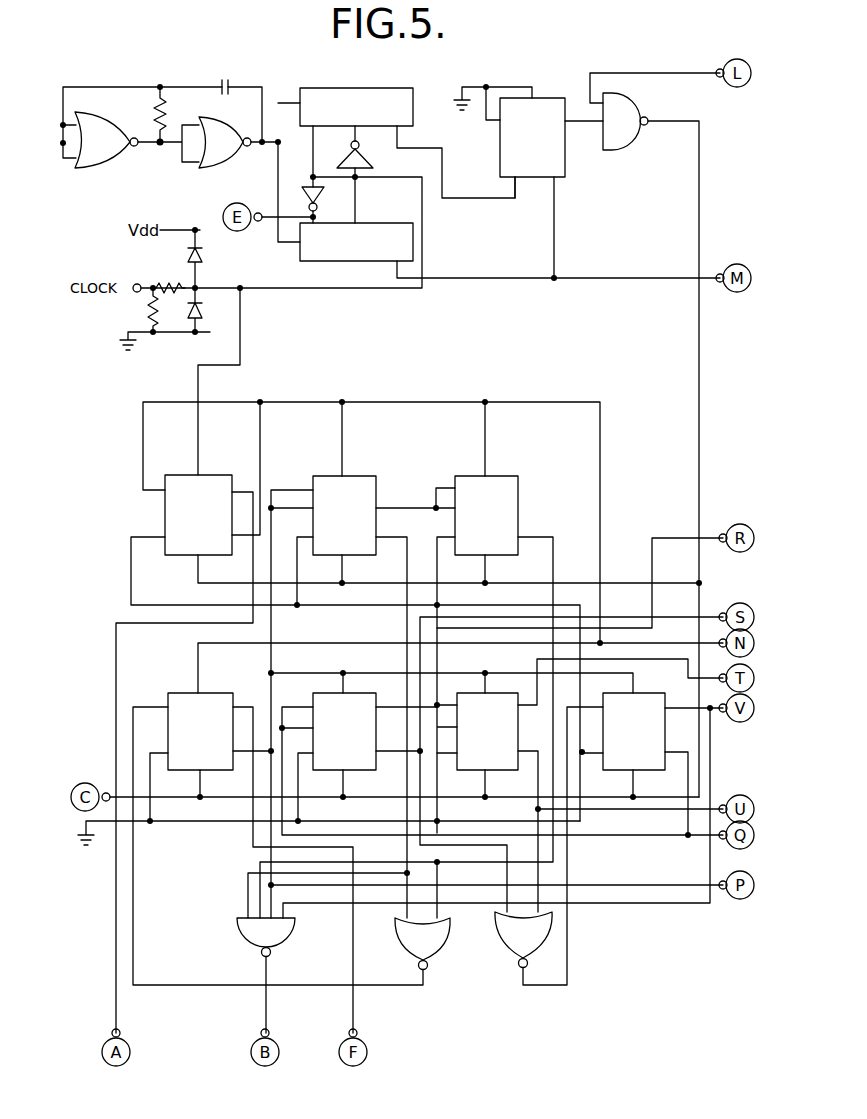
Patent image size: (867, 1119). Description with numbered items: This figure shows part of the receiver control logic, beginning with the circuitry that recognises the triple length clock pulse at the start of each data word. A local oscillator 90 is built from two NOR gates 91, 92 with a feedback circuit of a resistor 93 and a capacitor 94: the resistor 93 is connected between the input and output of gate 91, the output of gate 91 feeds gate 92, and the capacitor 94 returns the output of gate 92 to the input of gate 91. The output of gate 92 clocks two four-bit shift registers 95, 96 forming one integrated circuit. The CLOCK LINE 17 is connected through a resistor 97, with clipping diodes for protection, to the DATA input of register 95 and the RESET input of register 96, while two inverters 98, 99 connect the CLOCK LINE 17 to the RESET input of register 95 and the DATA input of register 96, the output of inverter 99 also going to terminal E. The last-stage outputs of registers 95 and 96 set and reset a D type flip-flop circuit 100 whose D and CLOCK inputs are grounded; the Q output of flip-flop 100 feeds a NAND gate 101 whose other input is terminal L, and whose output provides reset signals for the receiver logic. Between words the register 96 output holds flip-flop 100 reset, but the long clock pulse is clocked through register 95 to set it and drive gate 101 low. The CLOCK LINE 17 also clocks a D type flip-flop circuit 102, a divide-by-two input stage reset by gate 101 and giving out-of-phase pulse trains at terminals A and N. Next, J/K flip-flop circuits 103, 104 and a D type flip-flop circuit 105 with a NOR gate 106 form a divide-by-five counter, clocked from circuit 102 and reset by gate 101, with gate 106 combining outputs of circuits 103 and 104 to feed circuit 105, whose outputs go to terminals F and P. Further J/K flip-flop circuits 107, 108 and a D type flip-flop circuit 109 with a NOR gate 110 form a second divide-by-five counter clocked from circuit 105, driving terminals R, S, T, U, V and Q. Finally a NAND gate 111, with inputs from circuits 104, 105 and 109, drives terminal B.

The CLOCK LINE 17 is at (135, 293).
The local oscillator 90 is at (157, 156).
The NOR gate 91 is at (100, 126).
The NOR gate 92 is at (216, 130).
The resistor 93 is at (158, 118).
The capacitor 94 is at (221, 84).
The four-bit shift register 95 is at (352, 88).
The four-bit shift register 96 is at (309, 262).
The resistor 97 is at (168, 284).
The inverter 98 is at (374, 160).
The inverter 99 is at (308, 186).
The D type flip-flop circuit 100 is at (500, 158).
The NAND gate 101 is at (612, 150).
The D type flip-flop circuit 102 is at (165, 510).
The J/K type flip-flop circuit 103 is at (320, 476).
The J/K flip-flop circuit 104 is at (462, 476).
The D type flip-flop circuit 105 is at (172, 693).
The NOR gate 106 is at (437, 948).
The J/K type flip-flop circuit 107 is at (326, 693).
The J/K type flip-flop circuit 108 is at (466, 693).
The D type flip-flop circuit 109 is at (660, 693).
The NOR gate 110 is at (510, 929).
The NAND gate 111 is at (245, 937).